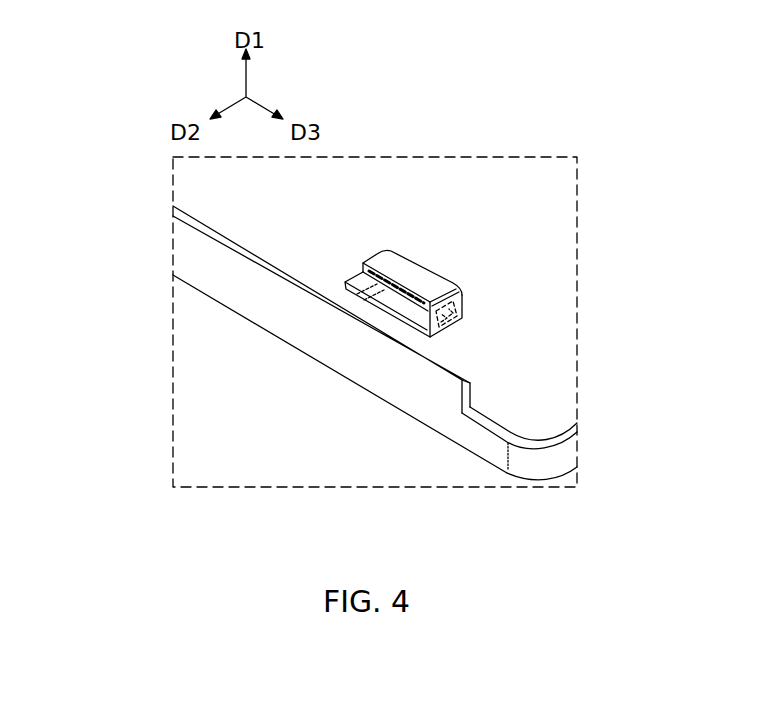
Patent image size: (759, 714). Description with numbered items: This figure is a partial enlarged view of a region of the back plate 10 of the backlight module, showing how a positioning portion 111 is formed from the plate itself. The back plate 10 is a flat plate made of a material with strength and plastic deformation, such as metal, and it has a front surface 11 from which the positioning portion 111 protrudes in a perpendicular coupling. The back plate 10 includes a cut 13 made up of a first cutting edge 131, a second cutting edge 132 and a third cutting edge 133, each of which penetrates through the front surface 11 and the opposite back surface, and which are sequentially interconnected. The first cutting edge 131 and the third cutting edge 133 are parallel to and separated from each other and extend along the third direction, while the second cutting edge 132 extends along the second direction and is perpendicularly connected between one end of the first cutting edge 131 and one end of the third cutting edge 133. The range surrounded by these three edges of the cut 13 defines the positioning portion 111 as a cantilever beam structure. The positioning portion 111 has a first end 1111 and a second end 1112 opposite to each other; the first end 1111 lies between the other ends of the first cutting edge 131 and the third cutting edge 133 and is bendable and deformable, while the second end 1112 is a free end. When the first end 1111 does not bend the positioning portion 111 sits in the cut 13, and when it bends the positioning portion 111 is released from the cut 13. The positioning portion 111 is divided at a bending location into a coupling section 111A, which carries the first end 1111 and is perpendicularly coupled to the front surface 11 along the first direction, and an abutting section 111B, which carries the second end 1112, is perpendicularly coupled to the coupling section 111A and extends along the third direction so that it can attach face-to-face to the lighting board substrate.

The back plate 10 is at (516, 182).
The front surface 11 is at (417, 174).
The cut 13 is at (446, 326).
The first cutting edge 131 is at (368, 290).
The second cutting edge 132 is at (347, 282).
The third cutting edge 133 is at (372, 292).
The positioning portion 111 is at (536, 282).
The first end 1111 is at (503, 314).
The second end 1112 is at (372, 257).
The coupling section 111A is at (458, 312).
The abutting section 111B is at (418, 268).